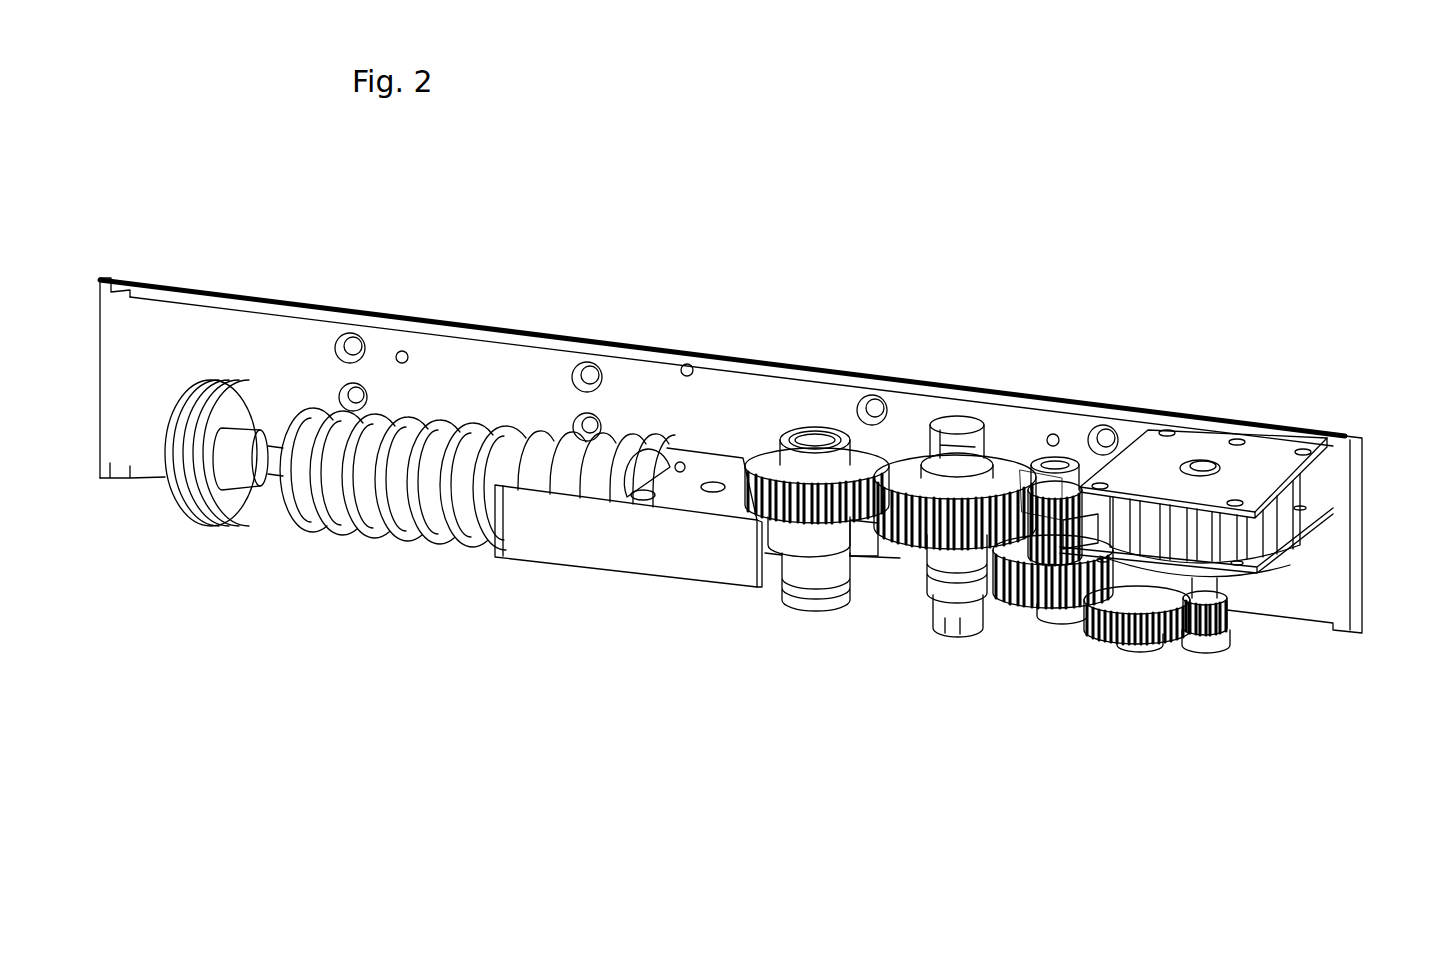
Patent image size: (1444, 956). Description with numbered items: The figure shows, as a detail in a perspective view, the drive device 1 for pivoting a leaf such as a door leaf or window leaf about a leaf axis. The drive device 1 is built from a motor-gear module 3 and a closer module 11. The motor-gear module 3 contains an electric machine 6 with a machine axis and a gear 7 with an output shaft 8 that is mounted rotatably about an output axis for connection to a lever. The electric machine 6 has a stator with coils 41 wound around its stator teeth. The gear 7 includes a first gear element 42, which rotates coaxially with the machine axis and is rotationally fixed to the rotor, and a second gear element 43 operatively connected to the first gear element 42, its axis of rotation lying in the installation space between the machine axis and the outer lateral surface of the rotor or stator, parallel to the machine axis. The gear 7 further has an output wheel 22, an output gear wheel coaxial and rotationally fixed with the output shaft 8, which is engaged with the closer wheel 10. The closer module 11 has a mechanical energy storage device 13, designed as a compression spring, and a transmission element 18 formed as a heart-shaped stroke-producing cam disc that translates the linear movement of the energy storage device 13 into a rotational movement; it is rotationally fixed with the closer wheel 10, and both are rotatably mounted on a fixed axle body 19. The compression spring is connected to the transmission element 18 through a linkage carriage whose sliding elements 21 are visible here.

The drive device 1 is at (909, 279).
The motor-gear module 3 is at (1113, 338).
The electric machine 6 is at (1262, 452).
The gear 7 is at (1019, 688).
The output shaft 8 is at (962, 607).
The closer wheel 10 is at (765, 470).
The closer module 11 is at (219, 584).
The mechanical energy storage device 13 is at (382, 533).
The transmission element 18 is at (868, 548).
The axle body 19 is at (812, 573).
The sliding elements 21 is at (610, 540).
The output wheel 22 is at (1021, 478).
The coil 41 is at (1288, 547).
The first gear element 42 is at (1205, 640).
The second gear element 43 is at (1130, 642).